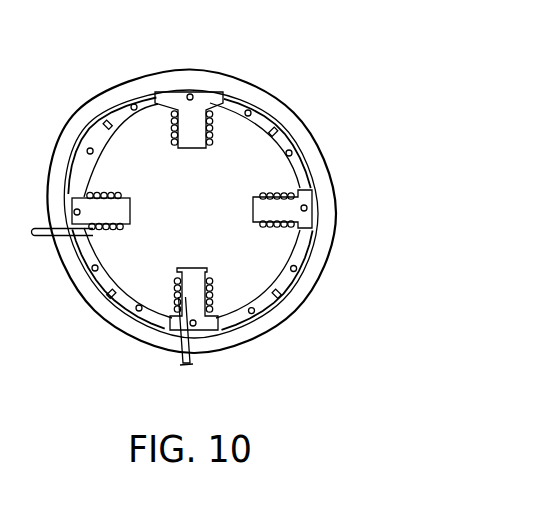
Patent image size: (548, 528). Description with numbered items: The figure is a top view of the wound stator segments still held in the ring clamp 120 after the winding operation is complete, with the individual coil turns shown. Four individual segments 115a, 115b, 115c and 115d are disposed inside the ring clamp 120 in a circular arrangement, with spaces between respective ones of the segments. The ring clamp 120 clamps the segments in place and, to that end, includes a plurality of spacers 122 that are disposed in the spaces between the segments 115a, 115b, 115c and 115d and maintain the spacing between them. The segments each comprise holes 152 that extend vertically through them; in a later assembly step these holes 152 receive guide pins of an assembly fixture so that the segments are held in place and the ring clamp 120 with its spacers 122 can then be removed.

The ring clamp 120 is at (323, 238).
The spacers 122 is at (278, 138).
The segment 115a is at (131, 207).
The segment 115b is at (194, 268).
The segment 115c is at (252, 221).
The segment 115d is at (189, 152).
The holes 152 is at (193, 92).